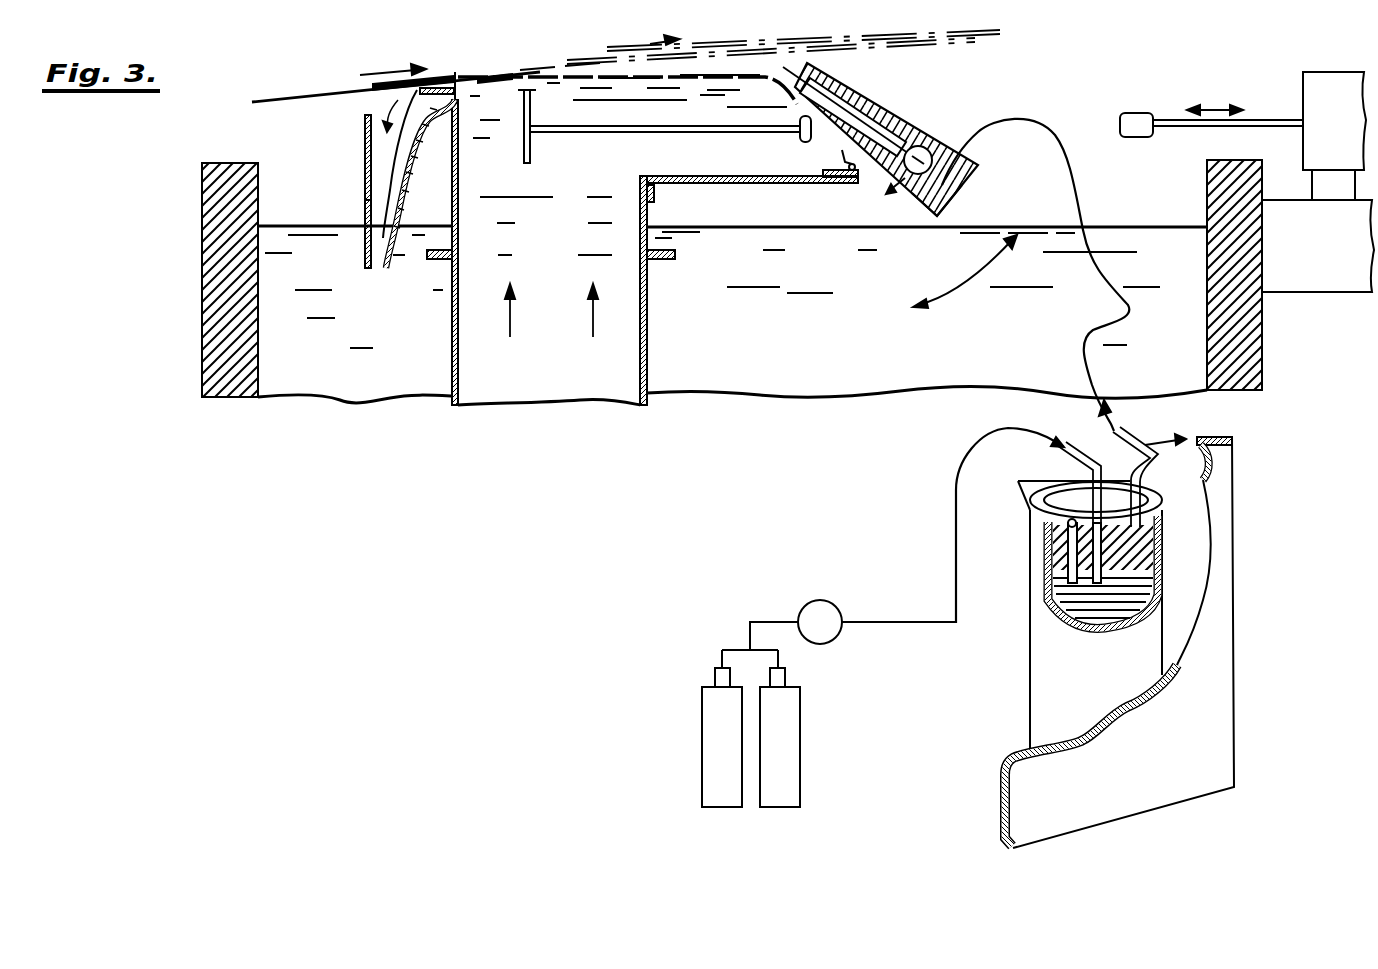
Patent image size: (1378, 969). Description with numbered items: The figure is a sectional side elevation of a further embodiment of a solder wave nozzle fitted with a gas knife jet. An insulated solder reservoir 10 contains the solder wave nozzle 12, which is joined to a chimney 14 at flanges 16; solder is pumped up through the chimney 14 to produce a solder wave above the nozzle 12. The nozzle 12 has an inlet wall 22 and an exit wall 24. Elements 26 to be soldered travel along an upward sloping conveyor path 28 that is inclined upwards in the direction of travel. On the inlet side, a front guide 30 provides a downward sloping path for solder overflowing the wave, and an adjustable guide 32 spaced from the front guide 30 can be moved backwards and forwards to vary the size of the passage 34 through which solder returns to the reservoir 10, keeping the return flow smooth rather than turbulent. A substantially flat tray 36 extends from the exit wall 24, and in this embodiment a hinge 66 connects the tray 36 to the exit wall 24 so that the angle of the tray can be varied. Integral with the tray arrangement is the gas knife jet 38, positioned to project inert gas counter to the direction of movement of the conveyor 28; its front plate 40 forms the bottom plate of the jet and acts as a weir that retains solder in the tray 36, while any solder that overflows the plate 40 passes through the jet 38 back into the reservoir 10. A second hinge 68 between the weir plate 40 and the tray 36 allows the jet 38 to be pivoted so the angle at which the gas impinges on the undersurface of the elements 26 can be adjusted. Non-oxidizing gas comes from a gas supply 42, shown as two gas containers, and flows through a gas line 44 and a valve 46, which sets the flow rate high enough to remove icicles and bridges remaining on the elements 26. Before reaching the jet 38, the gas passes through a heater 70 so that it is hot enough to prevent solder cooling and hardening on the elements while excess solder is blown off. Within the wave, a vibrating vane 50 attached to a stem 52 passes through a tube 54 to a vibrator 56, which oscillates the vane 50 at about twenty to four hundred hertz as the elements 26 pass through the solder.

The solder reservoir 10 is at (1262, 330).
The solder wave nozzle 12 is at (455, 72).
The chimney 14 is at (647, 325).
The flanges 16 is at (440, 259).
The inlet wall 22 is at (455, 200).
The exit wall 24 is at (660, 240).
The elements 26 is at (495, 72).
The conveyor path 28 is at (306, 97).
The front guide 30 is at (410, 166).
The adjustable guide 32 is at (362, 140).
The passage 34 is at (362, 212).
The tray 36 is at (760, 183).
The gas knife jet 38 is at (885, 108).
The front plate 40 is at (937, 216).
The gas supply 42 is at (785, 738).
The gas line 44 is at (1031, 122).
The valve 46 is at (836, 637).
The vibrating vane 50 is at (532, 150).
The stem 52 is at (1205, 128).
The tube 54 is at (1135, 140).
The vibrator 56 is at (1322, 80).
The hinge 66 is at (658, 200).
The hinge 68 is at (833, 182).
The heater 70 is at (1046, 563).